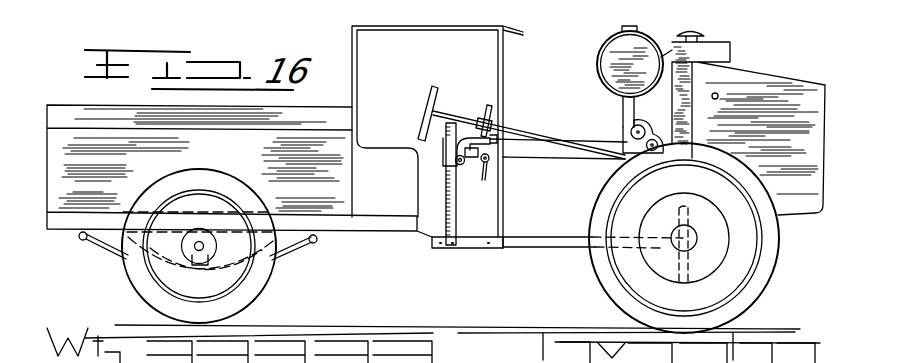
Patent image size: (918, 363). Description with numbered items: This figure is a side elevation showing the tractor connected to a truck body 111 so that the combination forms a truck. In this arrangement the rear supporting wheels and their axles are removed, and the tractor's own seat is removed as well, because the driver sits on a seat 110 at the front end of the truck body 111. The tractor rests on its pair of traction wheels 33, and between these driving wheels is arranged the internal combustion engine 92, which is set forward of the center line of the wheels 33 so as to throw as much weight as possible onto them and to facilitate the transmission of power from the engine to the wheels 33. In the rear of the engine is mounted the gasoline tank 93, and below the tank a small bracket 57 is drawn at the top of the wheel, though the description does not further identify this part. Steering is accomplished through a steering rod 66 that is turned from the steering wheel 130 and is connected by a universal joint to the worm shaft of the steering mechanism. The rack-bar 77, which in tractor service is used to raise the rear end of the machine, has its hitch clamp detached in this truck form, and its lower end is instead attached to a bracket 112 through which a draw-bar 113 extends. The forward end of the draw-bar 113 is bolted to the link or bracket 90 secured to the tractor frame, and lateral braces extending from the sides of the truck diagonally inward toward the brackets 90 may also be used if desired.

The truck body 111 is at (255, 158).
The seat 110 is at (377, 157).
The steering wheel 130 is at (434, 100).
The steering rod 66 is at (526, 129).
The gasoline tank 93 is at (598, 61).
The bracket 57 is at (646, 121).
The internal combustion engine 92 is at (735, 86).
The rack-bar 77 is at (449, 184).
The bracket 112 is at (450, 238).
The draw-bar 113 is at (531, 244).
The traction wheels 33 is at (612, 296).
The brackets 90 is at (688, 267).